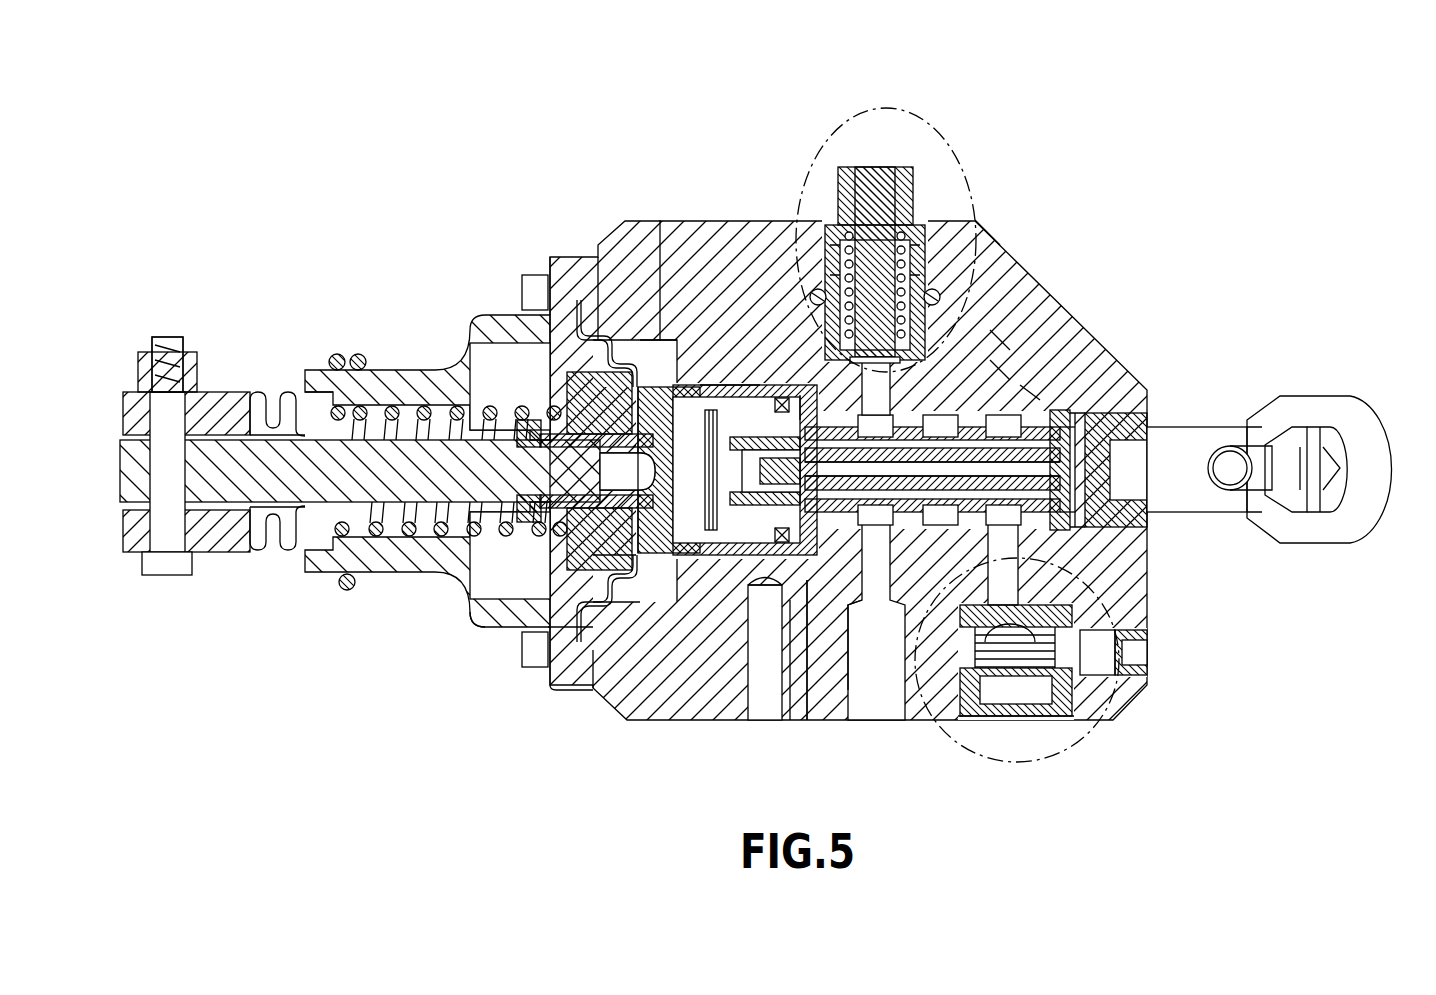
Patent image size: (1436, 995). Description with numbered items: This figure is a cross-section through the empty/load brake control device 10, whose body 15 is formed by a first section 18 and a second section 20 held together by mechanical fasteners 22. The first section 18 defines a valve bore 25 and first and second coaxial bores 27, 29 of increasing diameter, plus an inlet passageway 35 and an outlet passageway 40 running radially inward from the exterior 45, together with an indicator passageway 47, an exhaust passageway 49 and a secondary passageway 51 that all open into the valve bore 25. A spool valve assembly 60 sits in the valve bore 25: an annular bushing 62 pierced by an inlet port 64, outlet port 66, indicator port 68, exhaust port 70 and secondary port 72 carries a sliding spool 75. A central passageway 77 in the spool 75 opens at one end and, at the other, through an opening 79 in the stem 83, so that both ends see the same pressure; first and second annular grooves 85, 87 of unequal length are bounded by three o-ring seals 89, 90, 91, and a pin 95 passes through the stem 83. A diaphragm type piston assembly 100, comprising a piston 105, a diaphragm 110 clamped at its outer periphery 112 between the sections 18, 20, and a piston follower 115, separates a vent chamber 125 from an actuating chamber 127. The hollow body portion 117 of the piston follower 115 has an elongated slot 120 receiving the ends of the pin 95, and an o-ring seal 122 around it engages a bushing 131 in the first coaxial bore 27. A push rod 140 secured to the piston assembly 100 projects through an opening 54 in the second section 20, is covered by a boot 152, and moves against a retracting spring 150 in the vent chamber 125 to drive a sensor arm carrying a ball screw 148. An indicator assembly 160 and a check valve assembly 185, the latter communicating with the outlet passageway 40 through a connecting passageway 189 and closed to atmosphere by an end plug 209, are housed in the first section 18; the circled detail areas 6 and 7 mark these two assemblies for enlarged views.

The empty/load brake control device 10 is at (297, 150).
The detail view area of relief valve 6 is at (1057, 768).
The detail view area of valve 7 is at (958, 152).
The body 15 is at (1000, 340).
The first section 18 is at (748, 245).
The second section 20 is at (560, 262).
The mechanical fasteners 22 is at (525, 285).
The valve bore 25 is at (1130, 405).
The first coaxial bore 27 is at (655, 335).
The second coaxial bore 29 is at (615, 610).
The inlet passageway 35 is at (776, 722).
The outlet passageway 40 is at (877, 707).
The exterior 45 is at (975, 290).
The indicator passageway 47 is at (1000, 370).
The exhaust passageway 49 is at (1030, 390).
The secondary passageway 51 is at (1100, 600).
The opening 54 is at (278, 392).
The spool valve assembly 60 is at (1100, 400).
The annular bushing 62 is at (1115, 533).
The inlet port 64 is at (757, 720).
The outlet port 66 is at (865, 720).
The indicator port 68 is at (820, 400).
The exhaust port 70 is at (1080, 390).
The secondary port 72 is at (1080, 565).
The spool 75 is at (682, 720).
The central passageway 77 is at (1060, 470).
The opening 79 is at (760, 392).
The stem 83 is at (655, 700).
The first peripheral annular groove 85 is at (884, 712).
The second peripheral annular groove 87 is at (1075, 420).
The o-ring seal 89 is at (808, 720).
The o-ring seal 90 is at (947, 655).
The o-ring seal 91 is at (1090, 468).
The pin 95 is at (640, 600).
The diaphragm type piston assembly 100 is at (482, 330).
The piston 105 is at (500, 592).
The diaphragm 110 is at (520, 590).
The outer periphery 112 is at (540, 625).
The piston follower 115 is at (548, 394).
The hollow body portion 117 is at (675, 340).
The elongated slot 120 is at (600, 322).
The o-ring seal 122 is at (714, 720).
The vent chamber 125 is at (650, 575).
The actuating chamber 127 is at (603, 330).
The bushing 131 is at (652, 720).
The push rod 140 is at (262, 468).
The ball screw 148 is at (1355, 520).
The retracting spring 150 is at (392, 400).
The boot 152 is at (258, 385).
The indicator assembly 160 is at (890, 176).
The check valve assembly 185 is at (1080, 718).
The connecting passageway 189 is at (1007, 707).
The end plug 209 is at (1150, 656).